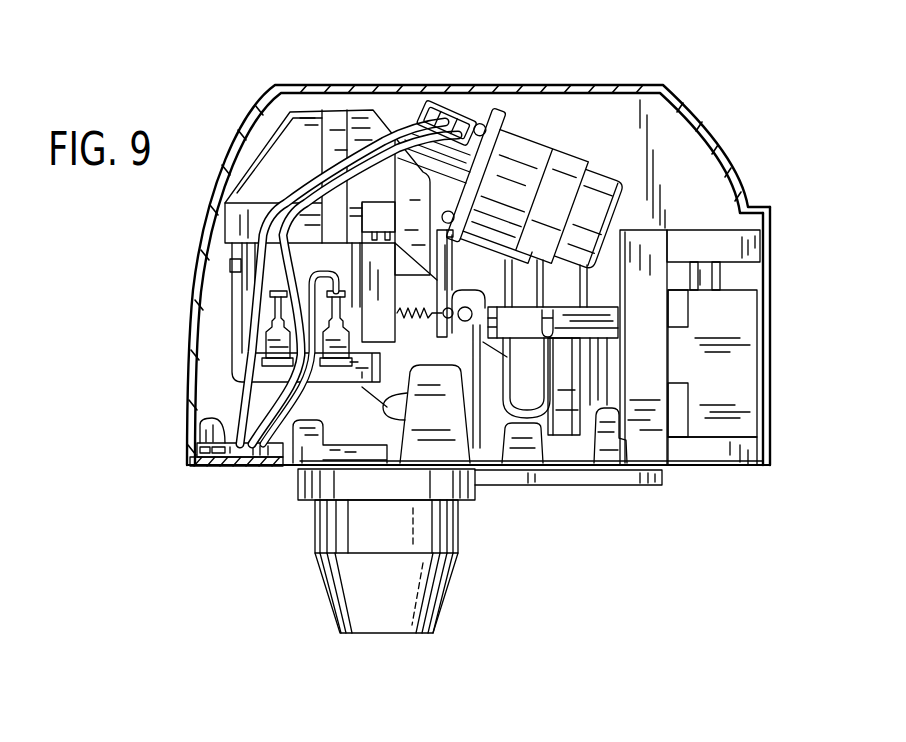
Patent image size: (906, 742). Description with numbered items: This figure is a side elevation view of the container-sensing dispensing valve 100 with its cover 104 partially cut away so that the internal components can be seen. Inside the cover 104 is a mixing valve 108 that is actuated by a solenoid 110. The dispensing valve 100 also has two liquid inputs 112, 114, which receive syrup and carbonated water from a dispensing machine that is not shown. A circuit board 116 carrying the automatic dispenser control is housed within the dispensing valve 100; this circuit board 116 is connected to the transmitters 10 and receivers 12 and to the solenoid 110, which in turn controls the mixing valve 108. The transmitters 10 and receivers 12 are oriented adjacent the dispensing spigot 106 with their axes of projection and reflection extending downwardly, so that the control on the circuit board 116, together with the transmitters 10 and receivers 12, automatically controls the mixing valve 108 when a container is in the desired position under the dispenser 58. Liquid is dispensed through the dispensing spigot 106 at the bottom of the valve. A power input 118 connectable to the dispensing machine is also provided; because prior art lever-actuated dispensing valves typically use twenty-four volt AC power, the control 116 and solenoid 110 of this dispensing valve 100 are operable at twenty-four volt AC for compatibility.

The dispensing valve 100 is at (458, 338).
The cover 104 is at (395, 82).
The power input 118 is at (453, 133).
The mixing valve 108 is at (551, 187).
The solenoid 110 is at (295, 274).
The liquid input 112 is at (784, 357).
The liquid input 114 is at (784, 380).
The circuit board 116 is at (218, 440).
The dispensing spigot 106 is at (385, 562).
The dispenser 58 is at (458, 625).
The receivers 12 is at (510, 492).
The transmitters 10 is at (550, 492).